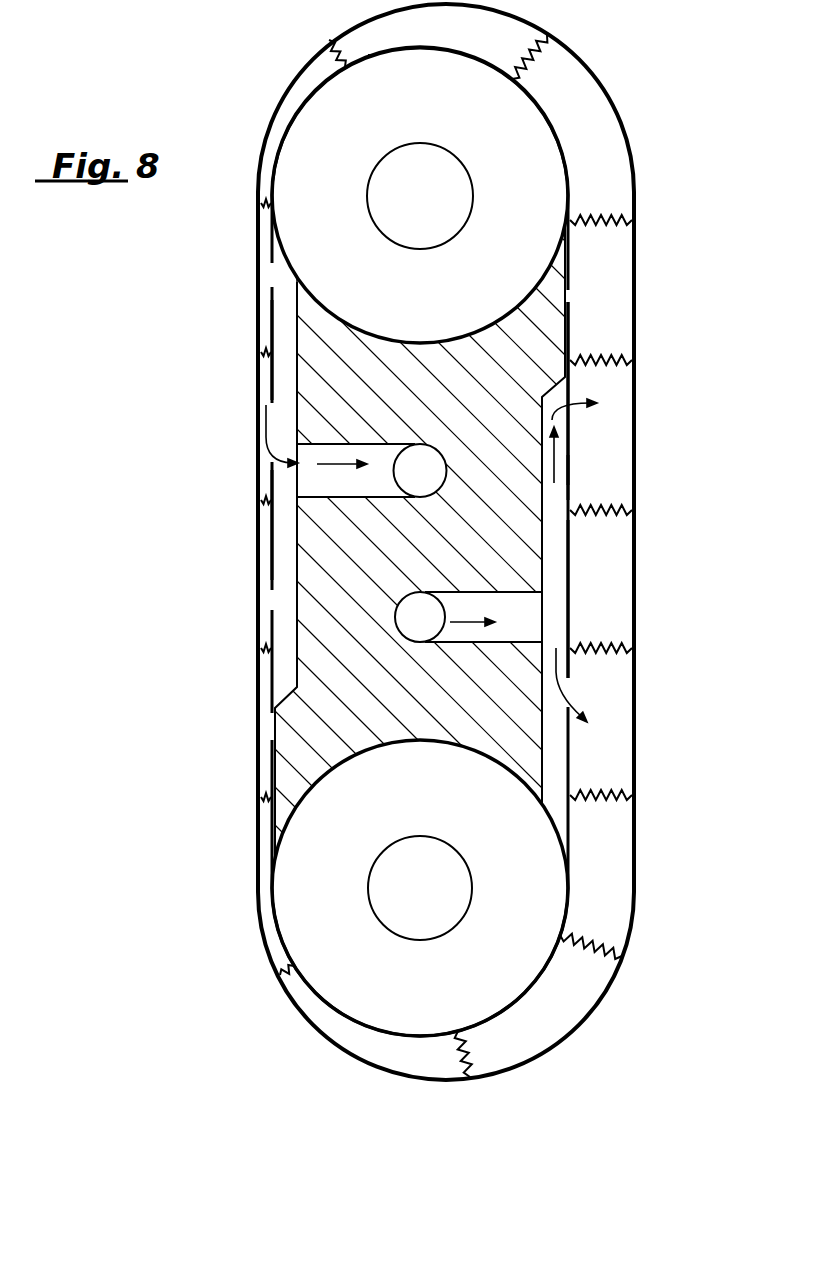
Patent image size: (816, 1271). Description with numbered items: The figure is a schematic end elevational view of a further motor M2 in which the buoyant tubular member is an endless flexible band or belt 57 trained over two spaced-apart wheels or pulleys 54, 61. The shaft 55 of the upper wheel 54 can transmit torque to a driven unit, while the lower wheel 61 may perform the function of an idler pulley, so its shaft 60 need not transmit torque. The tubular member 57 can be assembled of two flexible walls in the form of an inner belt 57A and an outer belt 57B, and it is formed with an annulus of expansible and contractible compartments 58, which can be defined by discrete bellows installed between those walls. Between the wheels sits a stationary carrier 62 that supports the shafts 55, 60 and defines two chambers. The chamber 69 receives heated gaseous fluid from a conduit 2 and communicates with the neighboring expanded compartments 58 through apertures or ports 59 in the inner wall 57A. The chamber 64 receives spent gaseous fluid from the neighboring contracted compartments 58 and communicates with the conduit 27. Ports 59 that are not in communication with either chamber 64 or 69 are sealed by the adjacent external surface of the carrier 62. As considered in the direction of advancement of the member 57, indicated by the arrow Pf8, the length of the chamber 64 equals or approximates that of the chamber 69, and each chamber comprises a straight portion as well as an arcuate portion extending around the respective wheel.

The motor M2 is at (252, 95).
The arrow Pf8 is at (238, 230).
The upper wheel 54 is at (523, 127).
The shaft 55 is at (440, 218).
The tubular member 57 is at (459, 542).
The inner wall 57A is at (565, 288).
The outer wall 57B is at (637, 617).
The compartments 58 is at (622, 430).
The apertures or ports 59 is at (580, 388).
The shaft 60 is at (406, 850).
The wheel 61 is at (370, 1003).
The stationary carrier 62 is at (310, 397).
The chamber 64 is at (288, 329).
The chamber 69 is at (560, 470).
The conduit 27 is at (430, 462).
The conduit 2 is at (432, 612).